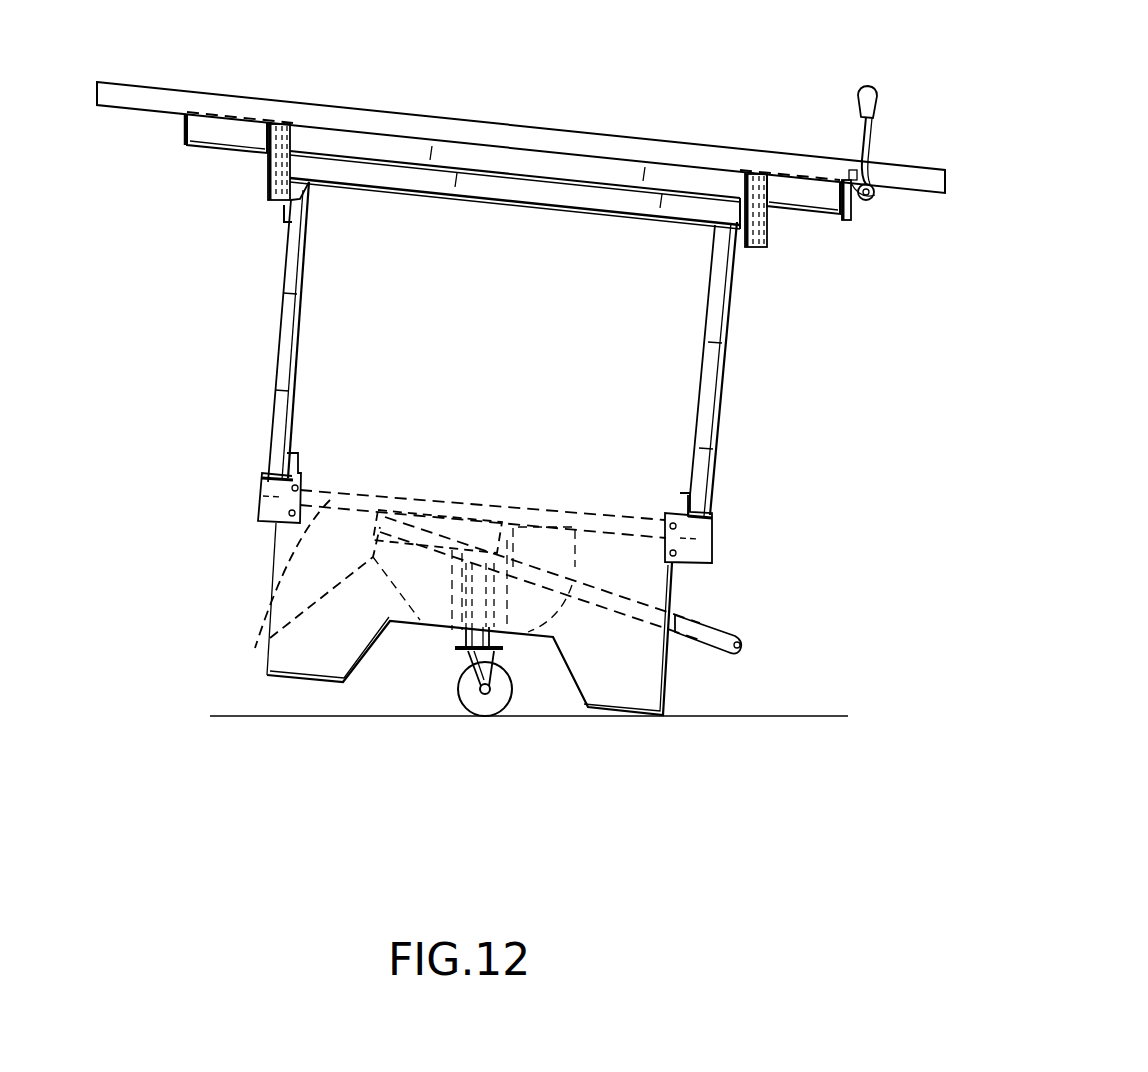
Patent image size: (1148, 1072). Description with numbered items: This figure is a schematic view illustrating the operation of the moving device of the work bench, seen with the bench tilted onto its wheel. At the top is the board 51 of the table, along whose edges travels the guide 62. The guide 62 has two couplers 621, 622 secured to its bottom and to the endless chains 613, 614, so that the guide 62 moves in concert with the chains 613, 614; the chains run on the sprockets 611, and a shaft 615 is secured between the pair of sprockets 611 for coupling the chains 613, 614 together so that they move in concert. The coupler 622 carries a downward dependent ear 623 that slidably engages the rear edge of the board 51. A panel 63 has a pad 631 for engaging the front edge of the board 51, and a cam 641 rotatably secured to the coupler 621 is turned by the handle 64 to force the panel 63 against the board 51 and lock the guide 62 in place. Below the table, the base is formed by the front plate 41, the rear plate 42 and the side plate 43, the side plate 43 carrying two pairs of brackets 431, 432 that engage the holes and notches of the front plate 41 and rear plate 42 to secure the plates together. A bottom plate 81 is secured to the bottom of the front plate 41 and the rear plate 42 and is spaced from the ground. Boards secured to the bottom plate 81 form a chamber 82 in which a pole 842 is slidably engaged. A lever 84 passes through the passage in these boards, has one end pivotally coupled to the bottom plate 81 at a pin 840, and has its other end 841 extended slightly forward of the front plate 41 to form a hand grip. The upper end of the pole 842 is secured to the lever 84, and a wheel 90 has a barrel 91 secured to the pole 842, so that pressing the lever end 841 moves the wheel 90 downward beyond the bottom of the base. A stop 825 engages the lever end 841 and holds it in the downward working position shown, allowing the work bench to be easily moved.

The guide 62 is at (526, 137).
The coupler 622 is at (240, 63).
The coupler 621 is at (790, 115).
The downward dependent ear 623 is at (152, 155).
The board 51 is at (223, 165).
The sprocket 611 is at (268, 188).
The shaft 615 is at (515, 217).
The endless chain 613 is at (757, 247).
The pad 631 is at (554, 257).
The endless chain 614 is at (291, 208).
The panel 63 is at (866, 205).
The cam 641 is at (874, 197).
The handle 64 is at (894, 127).
The rear plate 42 is at (271, 332).
The front plate 41 is at (731, 369).
The bracket 432 is at (250, 519).
The bracket 431 is at (737, 250).
The side plate 43 is at (672, 686).
The lever end 841 is at (722, 607).
The lever 84 is at (483, 506).
The stop 825 is at (536, 533).
The pole 842 is at (459, 515).
The caster column 82 is at (440, 626).
The pin 840 is at (297, 612).
The bottom plate 81 is at (270, 574).
The barrel 91 is at (460, 640).
The wheel 90 is at (473, 734).